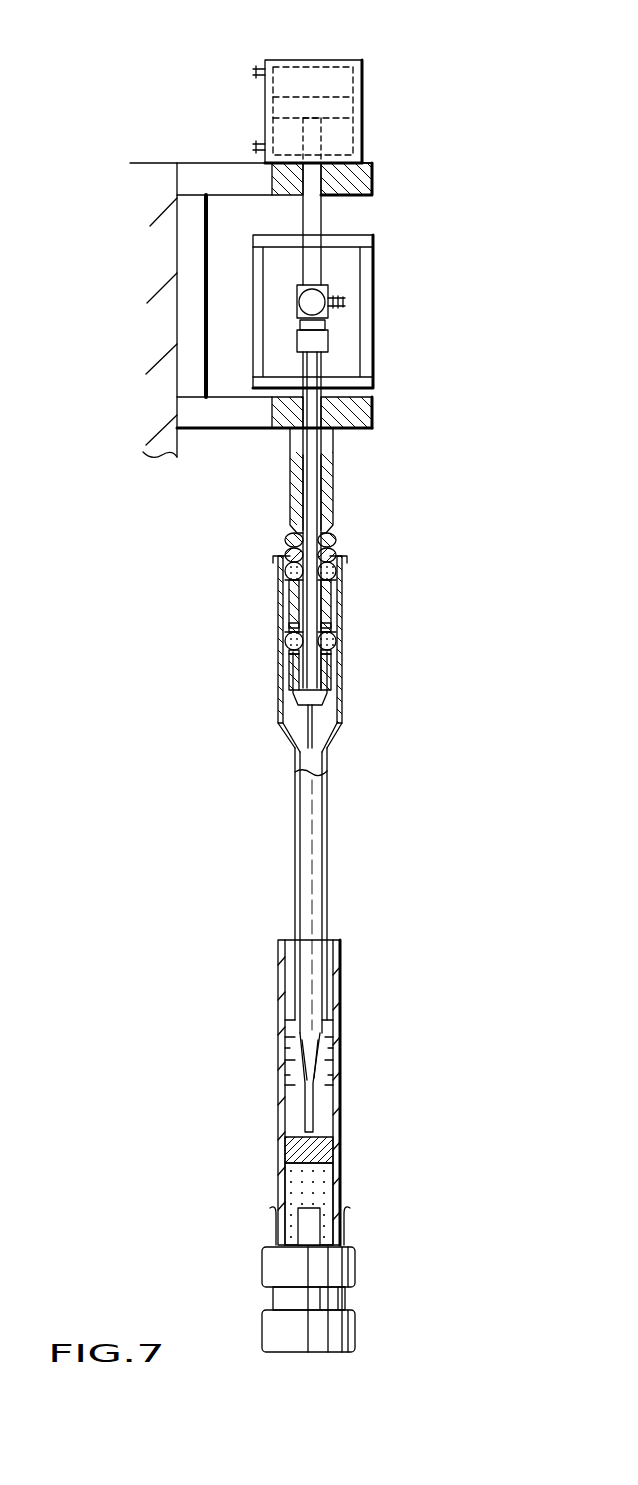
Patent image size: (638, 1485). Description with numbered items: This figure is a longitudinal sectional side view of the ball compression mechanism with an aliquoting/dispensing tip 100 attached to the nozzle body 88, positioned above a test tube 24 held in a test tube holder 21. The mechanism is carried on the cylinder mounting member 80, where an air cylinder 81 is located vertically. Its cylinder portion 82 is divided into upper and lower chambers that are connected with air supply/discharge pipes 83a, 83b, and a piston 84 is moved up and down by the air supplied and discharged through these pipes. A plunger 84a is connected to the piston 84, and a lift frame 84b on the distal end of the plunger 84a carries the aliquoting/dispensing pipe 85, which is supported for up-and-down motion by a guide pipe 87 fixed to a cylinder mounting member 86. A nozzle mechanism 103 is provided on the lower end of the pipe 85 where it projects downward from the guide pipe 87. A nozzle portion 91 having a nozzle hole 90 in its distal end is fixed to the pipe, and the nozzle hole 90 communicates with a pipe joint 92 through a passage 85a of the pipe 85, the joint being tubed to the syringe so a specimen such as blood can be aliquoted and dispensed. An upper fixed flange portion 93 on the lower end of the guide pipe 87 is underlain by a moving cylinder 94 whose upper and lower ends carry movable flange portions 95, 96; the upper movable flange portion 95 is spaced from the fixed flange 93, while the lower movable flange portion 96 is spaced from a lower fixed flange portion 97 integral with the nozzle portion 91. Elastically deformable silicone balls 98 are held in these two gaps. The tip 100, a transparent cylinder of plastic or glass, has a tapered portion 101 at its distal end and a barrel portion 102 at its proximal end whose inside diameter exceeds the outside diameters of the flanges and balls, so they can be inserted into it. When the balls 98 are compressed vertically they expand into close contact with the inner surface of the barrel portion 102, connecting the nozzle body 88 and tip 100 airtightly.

The test tube holder 21 is at (357, 1267).
The test tube 24 is at (338, 1062).
The cylinder mounting member 80 is at (198, 172).
The air cylinder 81 is at (380, 106).
The cylinder portion 82 is at (363, 63).
The air supply/discharge pipe 83a is at (258, 70).
The air supply/discharge pipe 83b is at (258, 146).
The piston 84 is at (330, 127).
The plunger 84a is at (315, 183).
The lift frame 84b is at (373, 260).
The aliquoting/dispensing pipe 85 is at (318, 370).
The passage 85a is at (312, 493).
The cylinder mounting member 86 is at (373, 417).
The guide pipe 87 is at (333, 447).
The nozzle body 88 is at (293, 602).
The nozzle hole 90 is at (312, 708).
The nozzle portion 91 is at (331, 677).
The pipe joint 92 is at (317, 298).
The upper fixed flange portion 93 is at (335, 538).
The moving cylinder 94 is at (295, 625).
The upper movable flange portion 95 is at (292, 572).
The lower movable flange portion 96 is at (288, 633).
The lower fixed flange portion 97 is at (287, 653).
The silicone ball 98 is at (343, 570).
The aliquoting/dispensing tip 100 is at (328, 860).
The tapered portion 101 is at (312, 1110).
The barrel portion 102 is at (338, 607).
The nozzle mechanism 103 is at (272, 541).